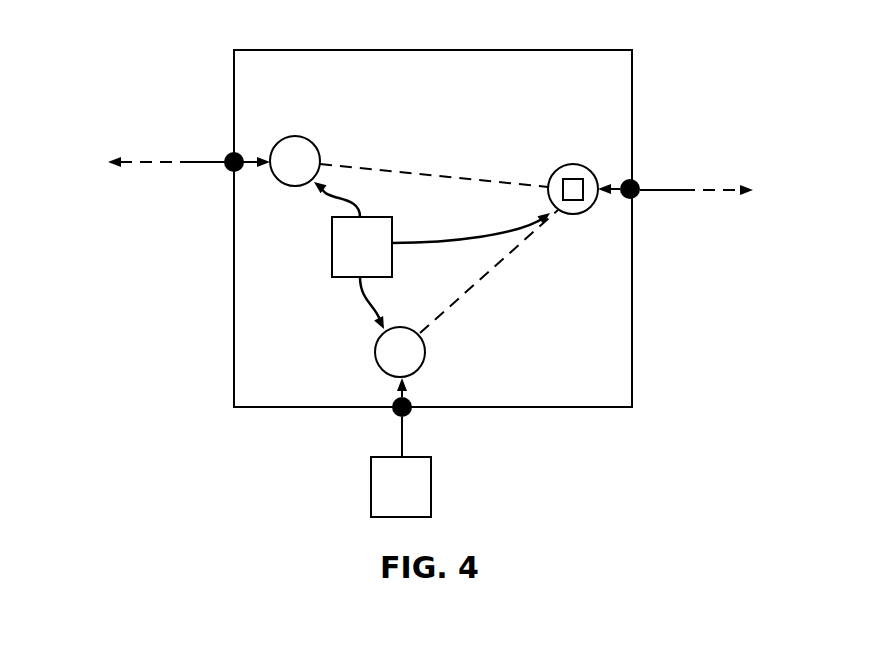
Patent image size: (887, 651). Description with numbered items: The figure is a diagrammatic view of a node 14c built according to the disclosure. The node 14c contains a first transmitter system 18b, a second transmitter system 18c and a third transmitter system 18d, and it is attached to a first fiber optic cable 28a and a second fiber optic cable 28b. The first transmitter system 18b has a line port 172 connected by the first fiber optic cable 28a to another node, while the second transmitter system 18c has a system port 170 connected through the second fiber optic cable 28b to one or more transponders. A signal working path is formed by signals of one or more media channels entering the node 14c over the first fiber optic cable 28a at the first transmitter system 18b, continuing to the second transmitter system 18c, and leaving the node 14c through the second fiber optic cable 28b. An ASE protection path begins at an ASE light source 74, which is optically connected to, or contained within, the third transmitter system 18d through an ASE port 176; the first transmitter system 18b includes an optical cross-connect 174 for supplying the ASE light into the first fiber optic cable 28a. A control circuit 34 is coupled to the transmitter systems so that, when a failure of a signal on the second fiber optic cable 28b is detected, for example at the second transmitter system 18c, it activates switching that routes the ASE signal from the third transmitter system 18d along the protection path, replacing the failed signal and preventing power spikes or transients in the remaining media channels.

The node 14c is at (768, 71).
The system port 170 is at (230, 154).
The line port 172 is at (633, 180).
The optical cross-connect 174 is at (580, 178).
The ASE port 176 is at (410, 414).
The first transmitter system 18b is at (564, 162).
The second transmitter system 18c is at (312, 142).
The third transmitter system 18d is at (425, 352).
The first fiber optic cable 28a is at (677, 193).
The second fiber optic cable 28b is at (182, 165).
The control circuit 34 is at (432, 255).
The ASE light source 74 is at (401, 467).